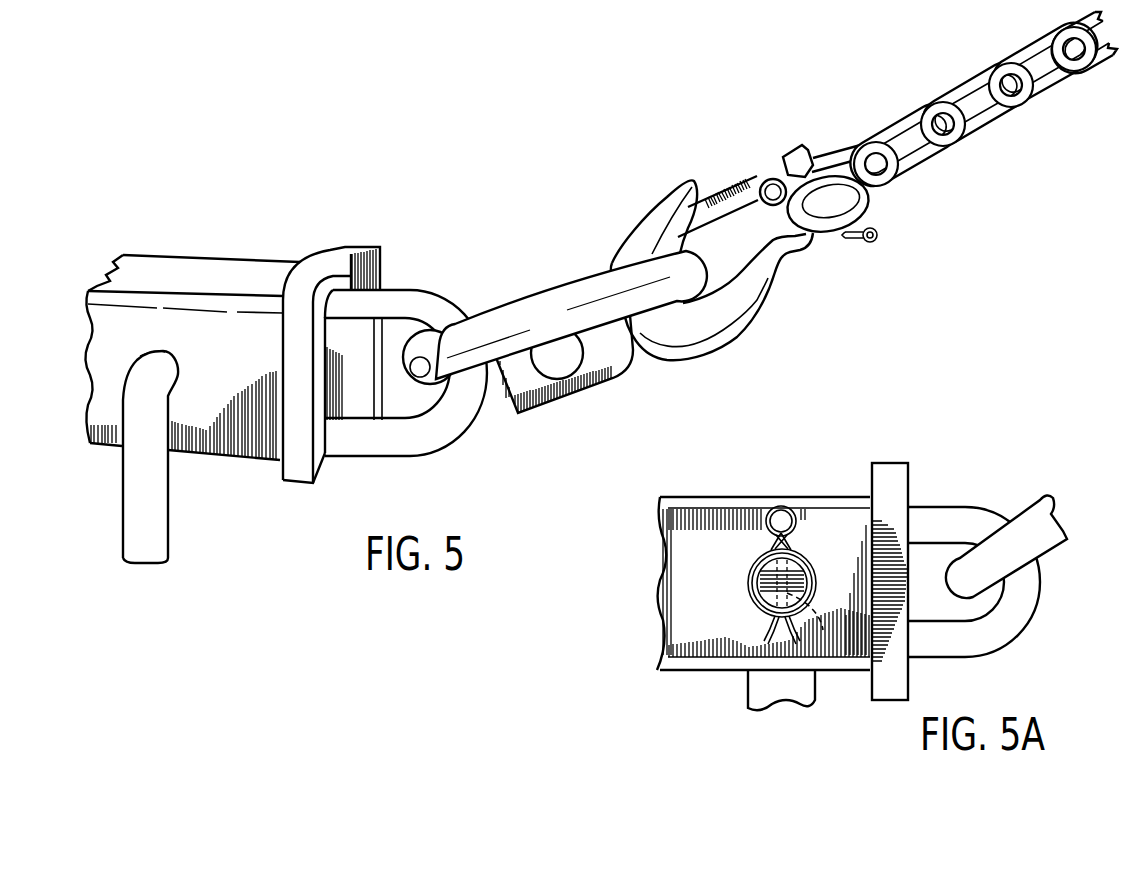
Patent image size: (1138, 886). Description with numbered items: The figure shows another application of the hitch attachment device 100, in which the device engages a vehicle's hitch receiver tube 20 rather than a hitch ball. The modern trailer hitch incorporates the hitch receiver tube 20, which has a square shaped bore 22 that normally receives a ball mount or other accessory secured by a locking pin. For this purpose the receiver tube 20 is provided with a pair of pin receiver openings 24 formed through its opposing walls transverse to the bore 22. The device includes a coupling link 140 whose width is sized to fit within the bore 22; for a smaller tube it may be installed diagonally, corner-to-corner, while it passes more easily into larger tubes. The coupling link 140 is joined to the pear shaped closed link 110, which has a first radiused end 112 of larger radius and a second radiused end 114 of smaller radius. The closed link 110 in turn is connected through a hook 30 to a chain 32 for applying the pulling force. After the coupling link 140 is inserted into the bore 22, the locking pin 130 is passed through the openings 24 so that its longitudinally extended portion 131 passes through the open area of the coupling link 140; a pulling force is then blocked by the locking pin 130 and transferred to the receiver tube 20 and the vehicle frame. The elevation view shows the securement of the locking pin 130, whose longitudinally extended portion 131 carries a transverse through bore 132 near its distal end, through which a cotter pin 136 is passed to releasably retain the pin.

In FIG. 5, the hitch attachment device 100 is at (488, 263).
In FIG. 5, the hitch receiver tube 20 is at (222, 262).
In FIG. 5A, the hitch receiver tube 20 is at (814, 497).
In FIG. 5, the bore of the receiver tube 22 is at (343, 394).
In FIG. 5, the pin receiver openings 24 is at (148, 354).
In FIG. 5, the hook 30 is at (767, 317).
In FIG. 5, the chain 32 is at (903, 115).
In FIG. 5, the closed link 110 is at (577, 281).
In FIG. 5A, the closed link 110 is at (1033, 538).
In FIG. 5, the first radiused end 112 is at (680, 267).
In FIG. 5, the second radiused end 114 is at (423, 358).
In FIG. 5, the locking pin 130 is at (157, 541).
In FIG. 5A, the longitudinally extended portion 131 is at (757, 576).
In FIG. 5A, the through bore 132 is at (823, 630).
In FIG. 5A, the cotter pin 136 is at (781, 506).
In FIG. 5, the coupling link 140 is at (402, 290).
In FIG. 5A, the coupling link 140 is at (945, 507).